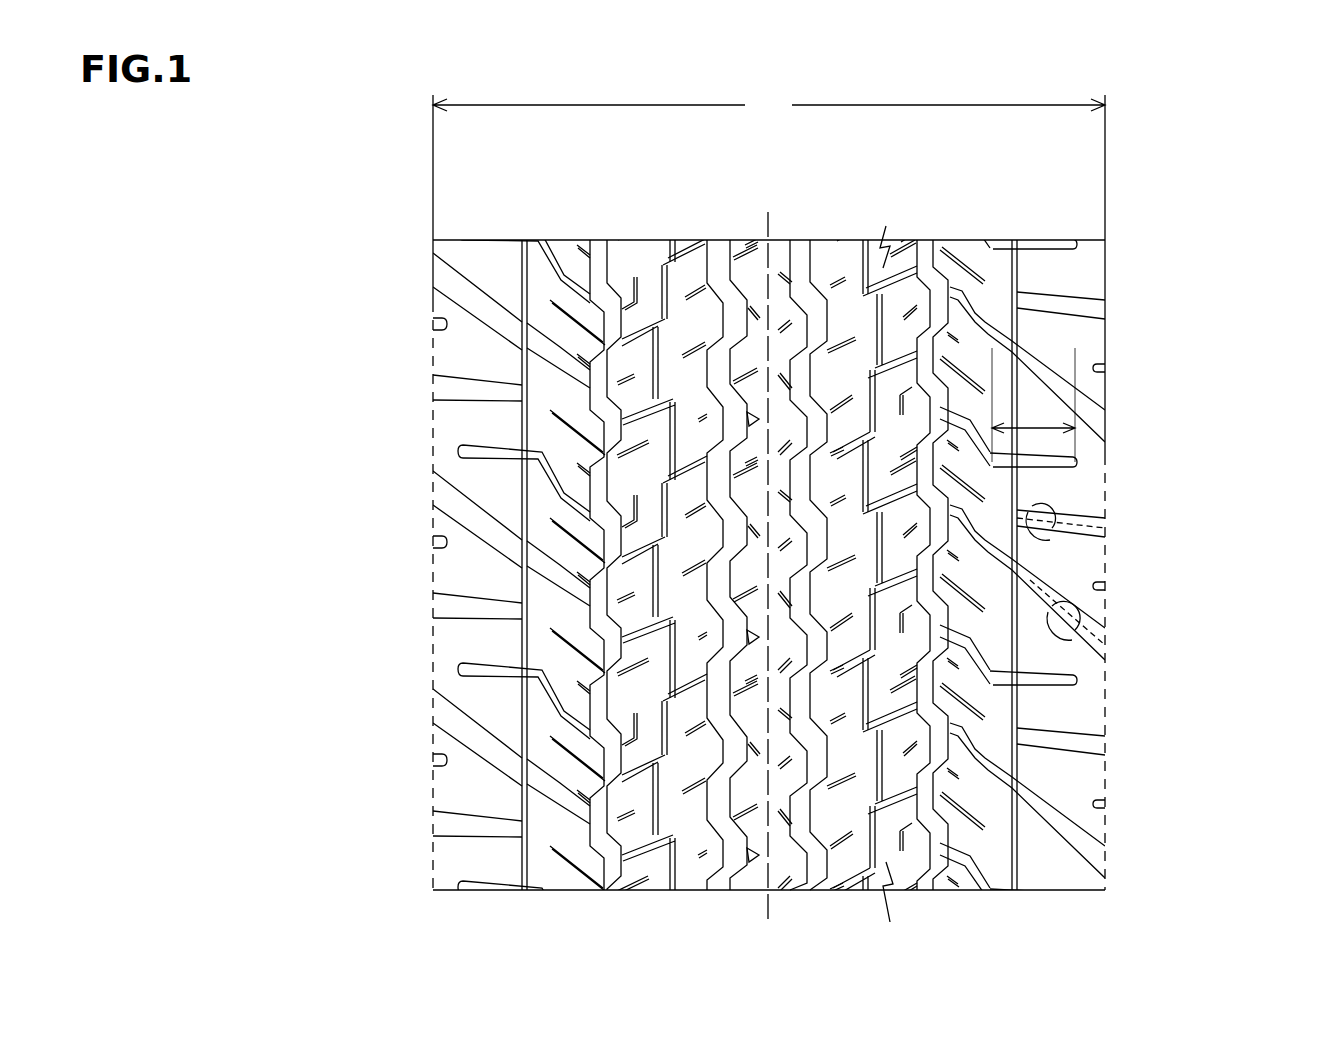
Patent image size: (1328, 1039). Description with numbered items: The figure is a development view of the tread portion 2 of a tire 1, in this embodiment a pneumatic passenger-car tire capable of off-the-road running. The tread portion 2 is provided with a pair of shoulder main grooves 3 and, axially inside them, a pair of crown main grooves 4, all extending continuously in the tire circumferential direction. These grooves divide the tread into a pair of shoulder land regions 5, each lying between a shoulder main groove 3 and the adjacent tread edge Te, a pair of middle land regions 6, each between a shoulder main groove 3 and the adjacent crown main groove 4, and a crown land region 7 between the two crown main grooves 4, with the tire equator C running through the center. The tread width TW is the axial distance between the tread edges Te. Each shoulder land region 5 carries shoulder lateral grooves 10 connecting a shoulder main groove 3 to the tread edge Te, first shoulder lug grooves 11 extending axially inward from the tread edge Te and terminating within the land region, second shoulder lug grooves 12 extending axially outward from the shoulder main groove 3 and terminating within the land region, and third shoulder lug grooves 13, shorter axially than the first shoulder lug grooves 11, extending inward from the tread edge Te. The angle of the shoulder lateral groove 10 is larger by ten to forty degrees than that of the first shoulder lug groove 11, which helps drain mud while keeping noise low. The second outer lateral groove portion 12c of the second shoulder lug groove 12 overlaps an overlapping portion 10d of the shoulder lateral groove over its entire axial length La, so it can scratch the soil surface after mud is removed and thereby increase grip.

The tire 1 is at (1131, 162).
The tread portion 2 is at (1004, 180).
The shoulder main groove 3 is at (600, 262).
The crown main groove 4 is at (720, 267).
The shoulder land region 5 is at (490, 262).
The middle land region 6 is at (650, 273).
The crown land region 7 is at (753, 262).
The shoulder lateral groove 10 is at (470, 508).
The overlapping portion 10d is at (1073, 355).
The first shoulder lug groove 11 is at (490, 606).
The second shoulder lug groove 12 is at (500, 668).
The second outer lateral groove portion 12c is at (1045, 460).
The third shoulder lug groove 13 is at (440, 548).
The tread width TW is at (769, 105).
The tire equator C is at (768, 554).
The tread edge Te is at (433, 299).
The entire length of the second outer lateral groove portion La is at (1035, 430).